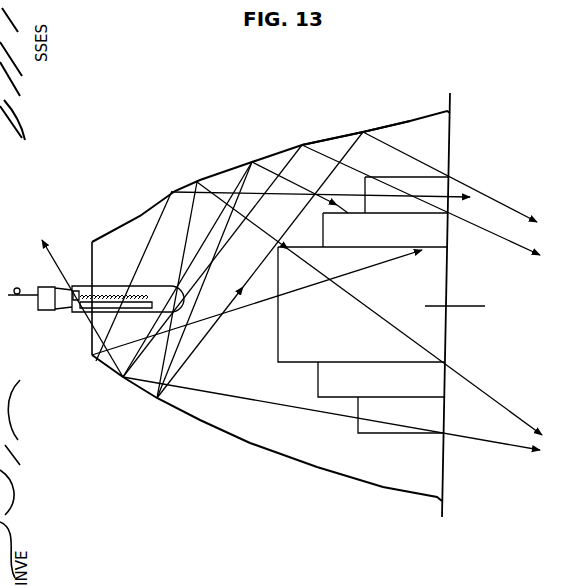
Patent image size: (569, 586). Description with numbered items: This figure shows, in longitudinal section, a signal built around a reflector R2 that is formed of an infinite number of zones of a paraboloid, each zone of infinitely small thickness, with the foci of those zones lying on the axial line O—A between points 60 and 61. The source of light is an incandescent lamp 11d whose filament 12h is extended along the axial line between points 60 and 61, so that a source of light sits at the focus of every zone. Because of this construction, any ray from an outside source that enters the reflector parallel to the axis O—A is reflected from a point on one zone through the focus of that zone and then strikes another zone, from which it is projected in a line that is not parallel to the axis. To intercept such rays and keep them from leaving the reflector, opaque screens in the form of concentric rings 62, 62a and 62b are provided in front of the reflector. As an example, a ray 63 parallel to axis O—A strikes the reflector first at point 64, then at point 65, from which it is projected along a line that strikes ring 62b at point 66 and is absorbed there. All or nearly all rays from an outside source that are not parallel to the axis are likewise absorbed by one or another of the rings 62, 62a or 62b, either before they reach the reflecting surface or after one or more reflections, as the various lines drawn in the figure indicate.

The incandescent lamp 11d is at (113, 287).
The filament 12h is at (138, 294).
The point on axial line 60 is at (77, 307).
The point on axial line 61 is at (150, 304).
The opaque screen ring 62 is at (406, 180).
The opaque screen ring 62a is at (385, 230).
The opaque screen ring 62b is at (362, 331).
The ray 63 is at (460, 199).
The point on reflector 64 is at (175, 192).
The point on reflector 65 is at (92, 358).
The point on ring 66 is at (424, 253).
The reflector R2 is at (339, 141).
The axial line end point A is at (455, 300).